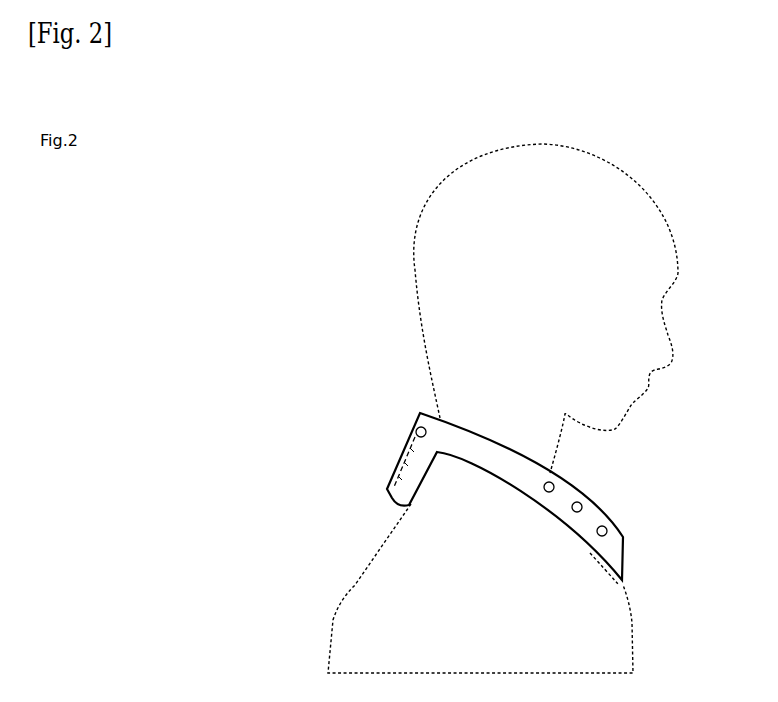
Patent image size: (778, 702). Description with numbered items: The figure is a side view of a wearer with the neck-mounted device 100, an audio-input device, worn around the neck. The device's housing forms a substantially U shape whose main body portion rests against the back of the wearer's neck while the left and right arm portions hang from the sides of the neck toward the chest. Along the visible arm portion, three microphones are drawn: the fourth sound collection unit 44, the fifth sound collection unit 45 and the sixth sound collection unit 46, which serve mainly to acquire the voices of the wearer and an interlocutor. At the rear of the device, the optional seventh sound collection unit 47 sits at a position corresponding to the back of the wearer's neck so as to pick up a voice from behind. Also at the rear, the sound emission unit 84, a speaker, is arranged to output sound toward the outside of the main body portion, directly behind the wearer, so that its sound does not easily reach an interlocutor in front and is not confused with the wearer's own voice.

The neck-mounted device 100 is at (408, 406).
The seventh sound collection unit 47 is at (415, 431).
The sound emission unit 84 is at (390, 462).
The sixth sound collection unit 46 is at (555, 485).
The fifth sound collection unit 45 is at (583, 506).
The fourth sound collection unit 44 is at (608, 529).